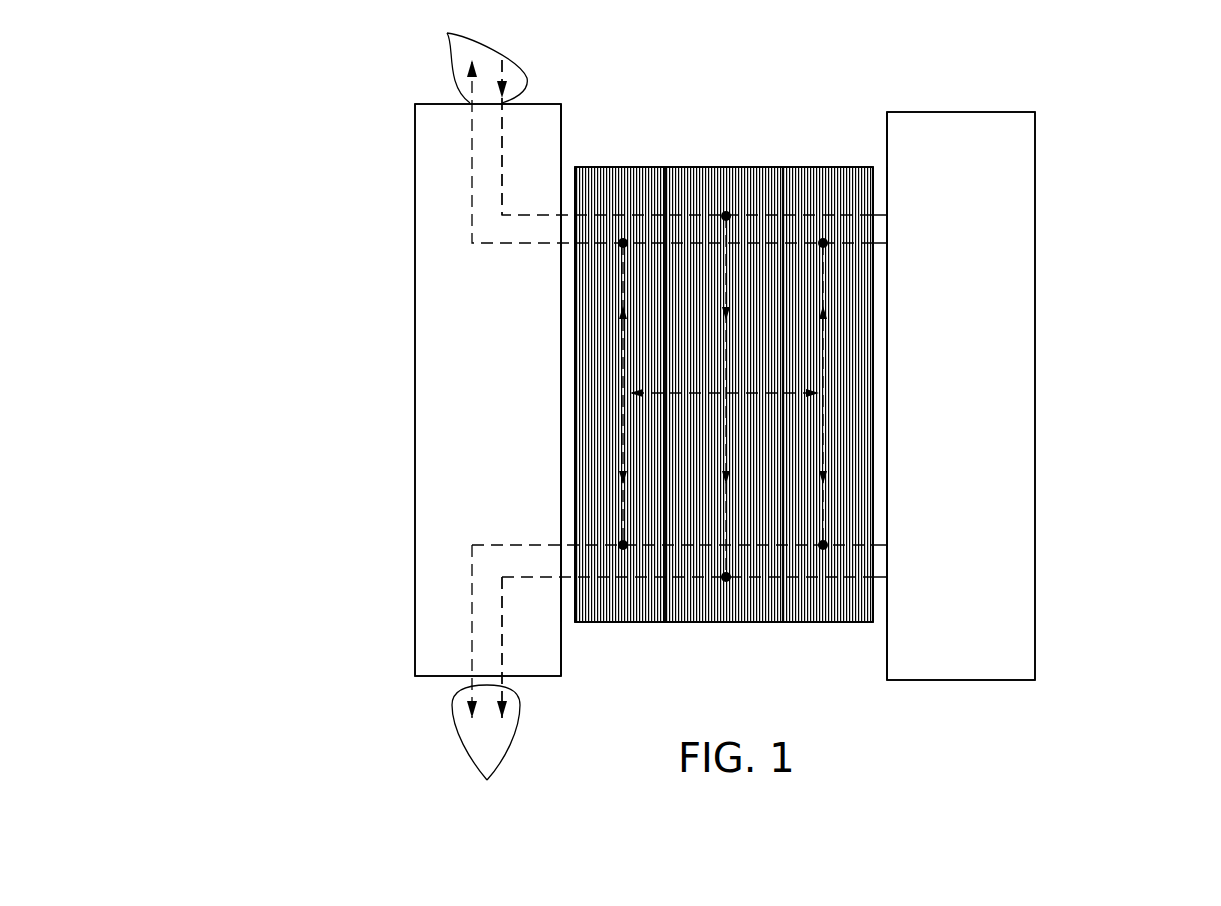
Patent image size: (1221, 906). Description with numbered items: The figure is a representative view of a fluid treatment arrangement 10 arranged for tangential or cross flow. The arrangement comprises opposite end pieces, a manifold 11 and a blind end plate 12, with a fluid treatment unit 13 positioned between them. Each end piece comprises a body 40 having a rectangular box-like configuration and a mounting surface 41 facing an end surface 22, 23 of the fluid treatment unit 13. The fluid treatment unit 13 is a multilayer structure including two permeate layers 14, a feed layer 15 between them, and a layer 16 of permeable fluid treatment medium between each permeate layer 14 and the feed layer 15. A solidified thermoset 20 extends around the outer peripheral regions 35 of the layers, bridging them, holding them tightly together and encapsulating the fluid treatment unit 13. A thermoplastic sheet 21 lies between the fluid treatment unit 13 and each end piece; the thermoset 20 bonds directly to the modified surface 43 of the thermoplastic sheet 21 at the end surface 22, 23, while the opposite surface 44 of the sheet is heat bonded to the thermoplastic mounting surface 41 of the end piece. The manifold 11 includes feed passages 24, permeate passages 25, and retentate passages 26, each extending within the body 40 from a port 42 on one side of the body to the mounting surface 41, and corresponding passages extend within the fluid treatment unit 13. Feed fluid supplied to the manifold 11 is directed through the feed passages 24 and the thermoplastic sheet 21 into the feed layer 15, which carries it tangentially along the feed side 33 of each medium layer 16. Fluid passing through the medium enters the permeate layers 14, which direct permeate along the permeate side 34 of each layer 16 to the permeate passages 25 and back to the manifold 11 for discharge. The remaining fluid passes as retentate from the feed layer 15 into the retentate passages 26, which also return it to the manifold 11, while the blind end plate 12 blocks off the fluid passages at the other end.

The fluid treatment arrangement 10 is at (1078, 103).
The manifold end piece 11 is at (442, 152).
The blind end plate 12 is at (995, 150).
The body 40 is at (725, 392).
The fluid treatment unit 13 is at (873, 635).
The permeate layer 14 is at (647, 187).
The feed layer 15 is at (749, 187).
The layer of fluid treatment medium 16 is at (675, 187).
The solidified thermoset 20 is at (745, 512).
The outer peripheral regions 35 is at (745, 512).
The thermoplastic sheet 21 is at (572, 388).
The end surface 22 is at (573, 342).
The end surface 23 is at (873, 329).
The feed passage 24 is at (502, 137).
The permeate passage 25 is at (470, 210).
The retentate passage 26 is at (502, 628).
The feed side 33 is at (768, 260).
The permeate side 34 is at (663, 228).
The mounting surface 41 is at (560, 262).
The port 42 is at (472, 412).
The modified surface 43 is at (573, 424).
The opposite surface 44 is at (560, 500).